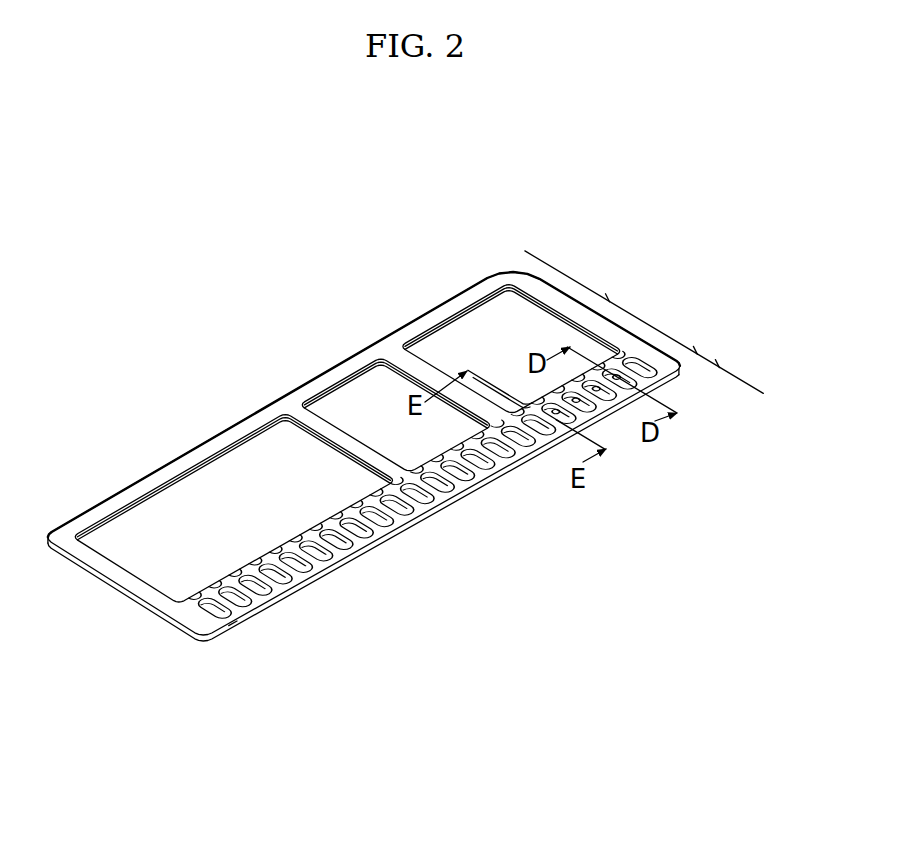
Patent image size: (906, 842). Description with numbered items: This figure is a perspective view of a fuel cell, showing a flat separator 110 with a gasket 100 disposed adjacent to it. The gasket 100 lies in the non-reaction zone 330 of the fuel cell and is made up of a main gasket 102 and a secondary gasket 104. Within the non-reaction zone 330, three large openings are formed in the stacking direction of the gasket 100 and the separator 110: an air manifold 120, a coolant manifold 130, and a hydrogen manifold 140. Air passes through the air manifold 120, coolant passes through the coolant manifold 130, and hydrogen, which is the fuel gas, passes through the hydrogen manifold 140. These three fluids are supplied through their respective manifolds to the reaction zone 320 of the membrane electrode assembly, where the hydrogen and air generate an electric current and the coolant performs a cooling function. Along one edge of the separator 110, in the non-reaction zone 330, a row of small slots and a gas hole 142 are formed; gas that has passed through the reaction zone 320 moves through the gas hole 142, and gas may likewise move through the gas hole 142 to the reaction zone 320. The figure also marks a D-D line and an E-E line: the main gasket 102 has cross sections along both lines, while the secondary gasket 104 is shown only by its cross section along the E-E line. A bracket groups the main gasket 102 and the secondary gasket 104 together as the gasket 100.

The gasket 100 is at (364, 506).
The main gasket 102 is at (237, 630).
The secondary gasket 104 is at (262, 605).
The separator 110 is at (434, 535).
The air manifold 120 is at (180, 500).
The coolant manifold 130 is at (352, 397).
The hydrogen manifold 140 is at (475, 322).
The gas hole 142 is at (612, 386).
The reaction zone 320 is at (730, 364).
The non-reaction zone 330 is at (611, 303).